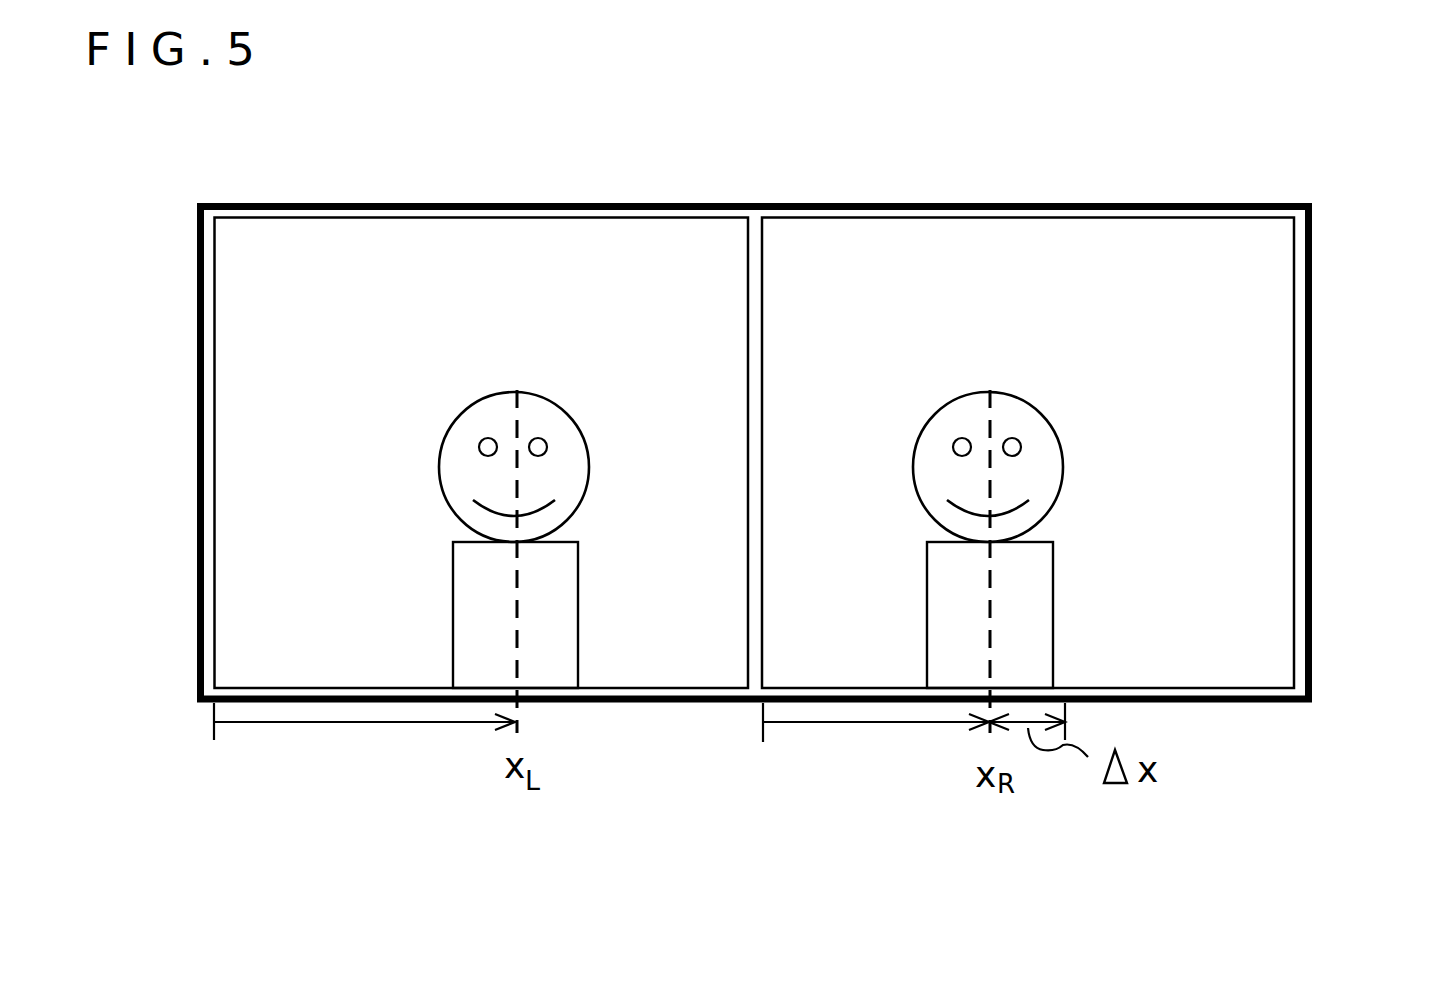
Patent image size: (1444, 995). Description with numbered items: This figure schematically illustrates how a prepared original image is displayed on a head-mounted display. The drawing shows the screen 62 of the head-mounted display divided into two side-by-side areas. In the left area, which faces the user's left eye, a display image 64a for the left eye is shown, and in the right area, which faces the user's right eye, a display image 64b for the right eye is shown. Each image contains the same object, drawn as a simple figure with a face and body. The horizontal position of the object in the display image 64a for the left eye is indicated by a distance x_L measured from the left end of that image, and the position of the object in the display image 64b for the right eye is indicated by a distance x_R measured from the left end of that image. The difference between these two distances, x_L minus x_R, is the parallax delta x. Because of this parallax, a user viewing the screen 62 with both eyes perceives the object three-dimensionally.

The screen 62 is at (1200, 203).
The display image for the left eye 64a is at (212, 293).
The display image for the right eye 64b is at (1300, 332).